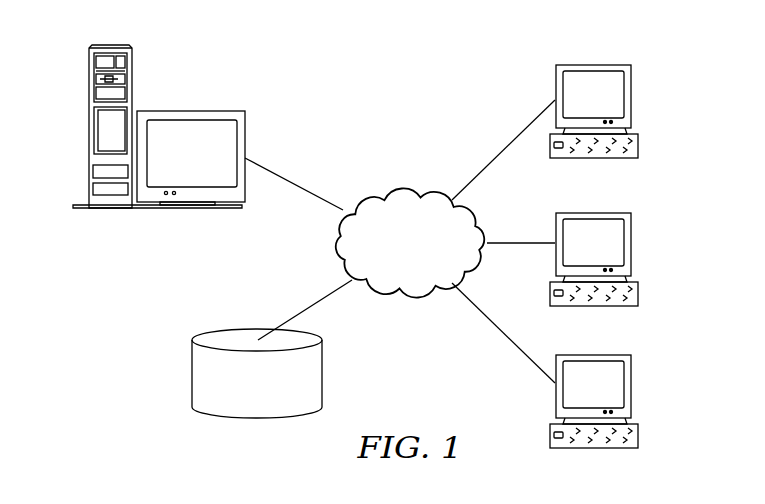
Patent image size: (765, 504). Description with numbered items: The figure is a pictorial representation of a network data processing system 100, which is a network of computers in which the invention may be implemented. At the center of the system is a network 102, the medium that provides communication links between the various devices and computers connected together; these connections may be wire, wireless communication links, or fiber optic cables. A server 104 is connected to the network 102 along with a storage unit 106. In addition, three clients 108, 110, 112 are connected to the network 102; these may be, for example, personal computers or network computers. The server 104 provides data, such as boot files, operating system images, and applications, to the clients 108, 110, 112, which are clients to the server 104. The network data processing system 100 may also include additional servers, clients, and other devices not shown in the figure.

The network data processing system 100 is at (460, 78).
The network 102 is at (380, 193).
The server 104 is at (88, 127).
The storage unit 106 is at (192, 372).
The client 108 is at (633, 97).
The client 110 is at (633, 244).
The client 112 is at (632, 387).